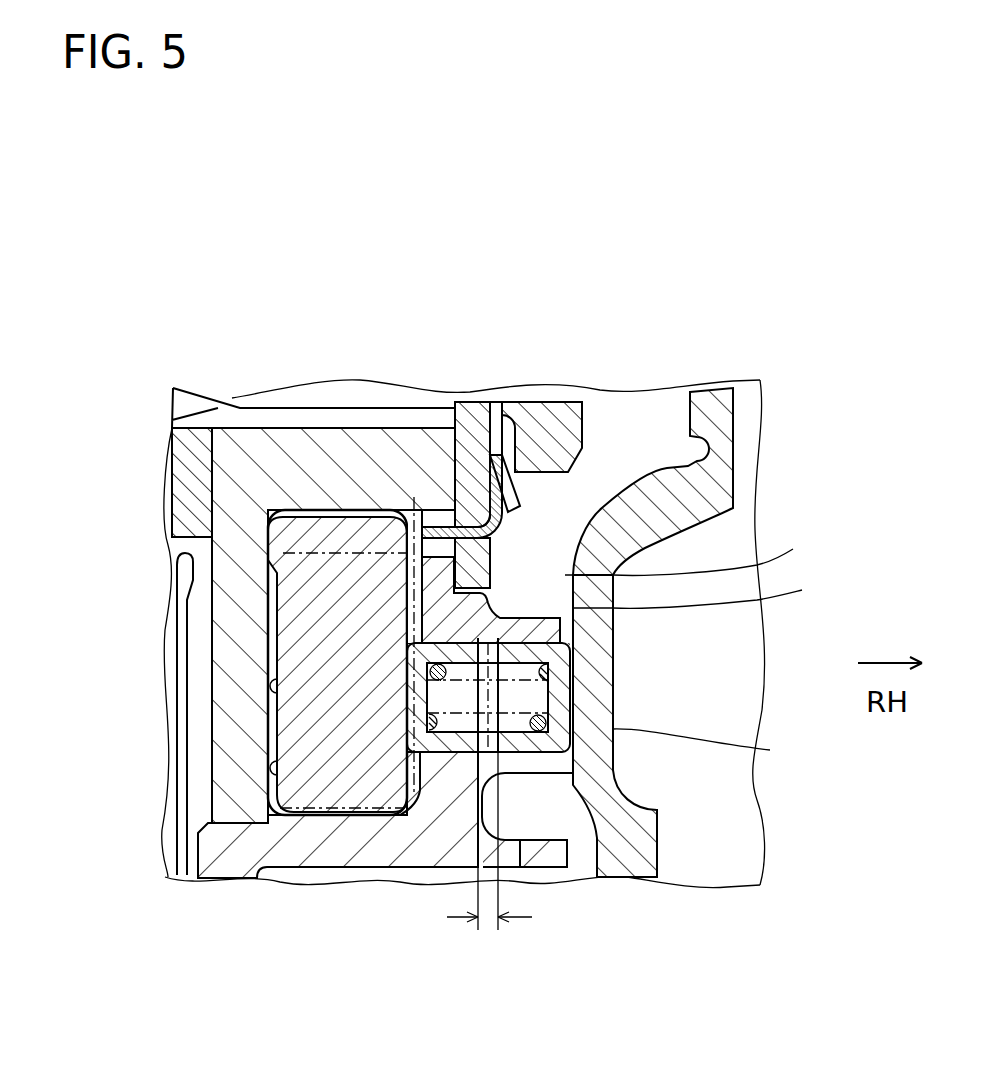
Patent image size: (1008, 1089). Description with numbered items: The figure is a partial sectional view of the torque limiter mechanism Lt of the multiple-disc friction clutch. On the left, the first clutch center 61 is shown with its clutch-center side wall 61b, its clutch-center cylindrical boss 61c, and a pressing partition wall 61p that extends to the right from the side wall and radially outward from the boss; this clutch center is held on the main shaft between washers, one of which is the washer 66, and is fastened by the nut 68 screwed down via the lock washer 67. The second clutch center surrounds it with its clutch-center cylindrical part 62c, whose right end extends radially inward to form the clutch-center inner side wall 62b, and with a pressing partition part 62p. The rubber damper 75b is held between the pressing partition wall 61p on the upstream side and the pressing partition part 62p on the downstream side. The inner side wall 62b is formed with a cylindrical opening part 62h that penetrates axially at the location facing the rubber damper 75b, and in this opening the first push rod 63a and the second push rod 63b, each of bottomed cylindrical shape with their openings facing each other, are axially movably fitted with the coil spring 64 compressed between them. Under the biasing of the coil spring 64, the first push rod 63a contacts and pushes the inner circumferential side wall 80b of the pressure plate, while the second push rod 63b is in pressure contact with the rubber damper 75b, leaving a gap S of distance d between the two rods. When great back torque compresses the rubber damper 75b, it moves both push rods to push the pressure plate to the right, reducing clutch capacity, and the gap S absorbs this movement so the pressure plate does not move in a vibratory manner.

The first clutch center 61 is at (60, 345).
The clutch-center side wall 61b is at (177, 598).
The clutch-center cylindrical boss 61c is at (228, 398).
The pressing partition wall 61p is at (398, 510).
The pressing partition part 62p is at (302, 552).
The clutch-center inner side wall 62b is at (794, 548).
The clutch-center cylindrical part 62c is at (353, 868).
The cylindrical opening part 62h is at (802, 590).
The first push rod 63a is at (515, 742).
The second push rod 63b is at (450, 748).
The coil spring 64 is at (555, 752).
The washer 66 is at (470, 402).
The lock washer 67 is at (518, 414).
The nut 68 is at (594, 413).
The rubber damper 75b is at (312, 773).
The inner circumferential side wall 80b is at (770, 750).
The gap S is at (487, 700).
The torque limiter mechanism Lt is at (498, 578).
The distance d is at (489, 935).